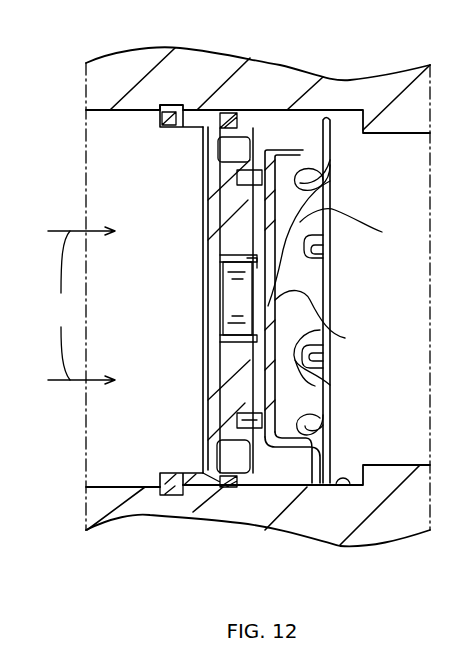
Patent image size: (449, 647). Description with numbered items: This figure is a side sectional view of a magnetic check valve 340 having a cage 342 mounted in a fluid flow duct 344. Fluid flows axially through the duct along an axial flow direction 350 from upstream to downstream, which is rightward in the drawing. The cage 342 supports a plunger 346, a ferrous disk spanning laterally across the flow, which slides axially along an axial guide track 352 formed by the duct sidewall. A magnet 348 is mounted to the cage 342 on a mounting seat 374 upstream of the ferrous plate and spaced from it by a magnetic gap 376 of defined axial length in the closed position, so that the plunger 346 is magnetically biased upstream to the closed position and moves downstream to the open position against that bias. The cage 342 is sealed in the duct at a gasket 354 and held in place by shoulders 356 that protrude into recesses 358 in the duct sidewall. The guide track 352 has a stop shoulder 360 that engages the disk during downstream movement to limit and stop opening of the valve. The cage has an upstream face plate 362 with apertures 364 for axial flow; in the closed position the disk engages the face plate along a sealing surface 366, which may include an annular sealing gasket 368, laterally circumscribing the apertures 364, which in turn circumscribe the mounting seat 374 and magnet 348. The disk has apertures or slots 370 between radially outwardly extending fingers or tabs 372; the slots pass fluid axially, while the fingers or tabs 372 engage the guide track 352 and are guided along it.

The magnetic check valve 340 is at (324, 56).
The cage 342 is at (215, 478).
The fluid flow duct 344 is at (100, 484).
The plunger 346 is at (281, 311).
The magnet 348 is at (233, 321).
The axial flow direction 350 is at (80, 305).
The axial guide track 352 is at (355, 493).
The gasket 354 is at (228, 481).
The shoulders 356 is at (170, 496).
The recesses 358 is at (163, 496).
The stop shoulder 360 is at (346, 478).
The upstream face plate 362 is at (205, 433).
The apertures 364 is at (207, 226).
The sealing surface 366 is at (305, 385).
The annular sealing gasket 368 is at (260, 421).
The apertures or slots 370 is at (322, 376).
The fingers or tabs 372 is at (333, 256).
The mounting seat 374 is at (330, 181).
The magnetic gap 376 is at (229, 281).